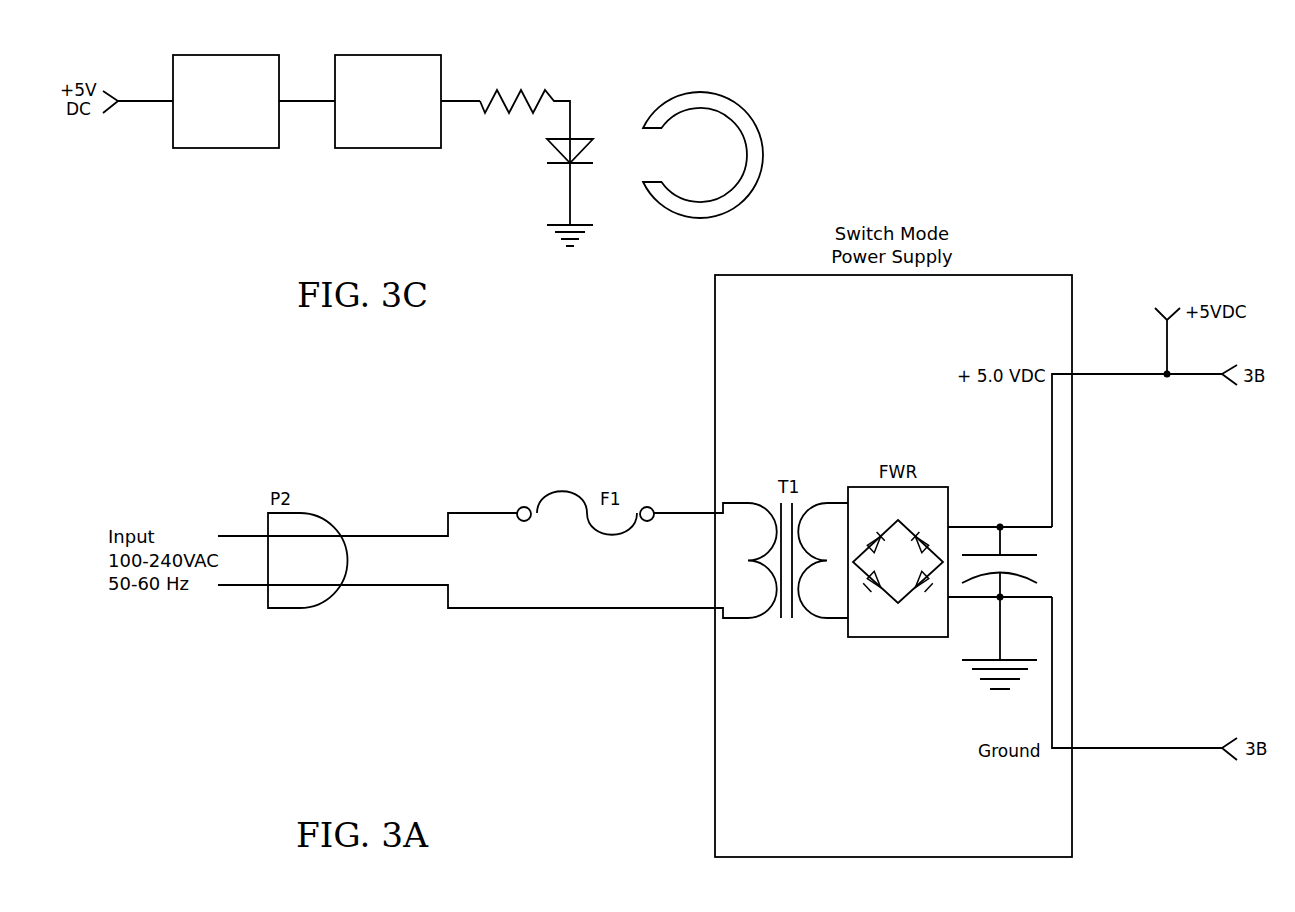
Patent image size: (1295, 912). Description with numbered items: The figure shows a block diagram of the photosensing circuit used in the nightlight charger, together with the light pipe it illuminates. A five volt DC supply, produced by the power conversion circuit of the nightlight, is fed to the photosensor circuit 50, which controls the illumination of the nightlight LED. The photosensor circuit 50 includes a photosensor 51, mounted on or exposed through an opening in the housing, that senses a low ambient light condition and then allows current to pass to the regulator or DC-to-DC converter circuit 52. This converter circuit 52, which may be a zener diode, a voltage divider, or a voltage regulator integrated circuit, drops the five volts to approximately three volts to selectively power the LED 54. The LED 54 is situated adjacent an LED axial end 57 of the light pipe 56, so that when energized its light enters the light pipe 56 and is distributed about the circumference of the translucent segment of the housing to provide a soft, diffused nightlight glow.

The photosensor circuit 50 is at (293, 167).
The photosensor 51 is at (207, 148).
The DC-to-DC converter circuit 52 is at (405, 148).
The light emitting diode 54 is at (591, 87).
The light pipe 56 is at (723, 98).
The LED axial end 57 is at (648, 132).